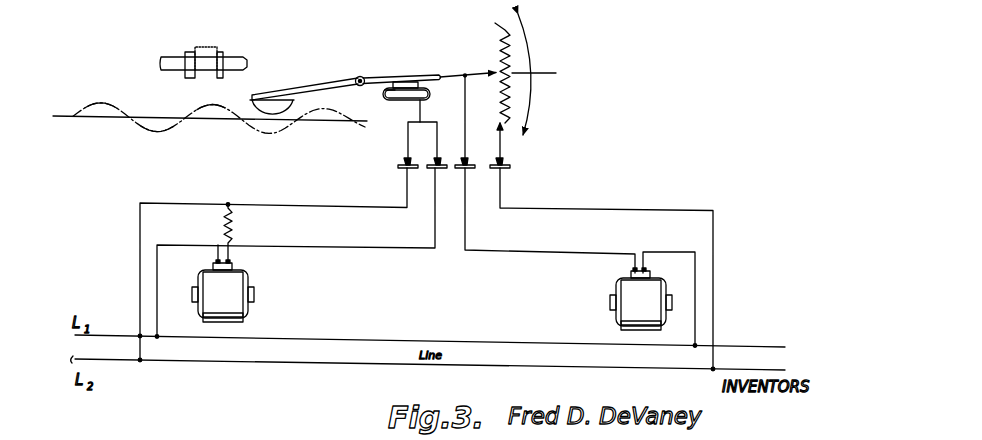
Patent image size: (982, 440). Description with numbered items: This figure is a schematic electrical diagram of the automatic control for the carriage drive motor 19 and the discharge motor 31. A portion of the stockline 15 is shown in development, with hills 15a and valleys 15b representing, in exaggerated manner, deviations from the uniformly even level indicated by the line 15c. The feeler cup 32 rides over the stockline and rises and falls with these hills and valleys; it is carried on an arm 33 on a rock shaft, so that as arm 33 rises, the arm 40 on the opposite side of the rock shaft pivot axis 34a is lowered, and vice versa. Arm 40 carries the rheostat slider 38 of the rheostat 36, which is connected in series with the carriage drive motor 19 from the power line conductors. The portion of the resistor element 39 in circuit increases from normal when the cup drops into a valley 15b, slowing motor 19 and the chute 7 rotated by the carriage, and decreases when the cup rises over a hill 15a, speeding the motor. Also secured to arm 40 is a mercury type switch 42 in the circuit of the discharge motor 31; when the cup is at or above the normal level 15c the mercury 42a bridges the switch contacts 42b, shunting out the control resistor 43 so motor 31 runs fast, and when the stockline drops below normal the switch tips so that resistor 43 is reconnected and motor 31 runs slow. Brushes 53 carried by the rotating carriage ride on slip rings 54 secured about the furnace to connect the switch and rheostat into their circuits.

The chute 7 is at (206, 47).
The stockline 15 is at (107, 123).
The hill 15a is at (103, 103).
The valley 15b is at (156, 131).
The uniformly even level line 15c is at (170, 118).
The carriage drive motor 19 is at (641, 299).
The discharge motor 31 is at (223, 283).
The feeler cup 32 is at (252, 98).
The arm 33 is at (313, 85).
The rock shaft pivot axis 34a is at (363, 77).
The rheostat 36 is at (576, 105).
The rheostat slider 38 is at (468, 65).
The resistor element 39 is at (496, 30).
The arm 40 is at (428, 76).
The mercury type switch 42 is at (383, 95).
The mercury 42a is at (395, 101).
The switch contacts 42b is at (430, 97).
The control resistor 43 is at (235, 232).
The brushes 53 is at (437, 161).
The slip rings 54 is at (436, 169).